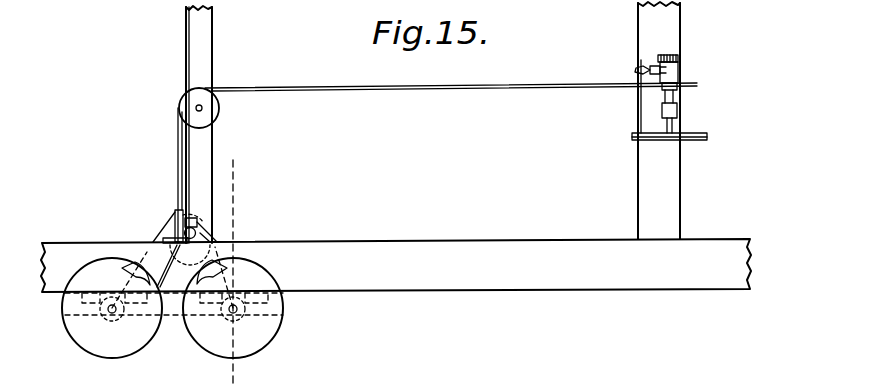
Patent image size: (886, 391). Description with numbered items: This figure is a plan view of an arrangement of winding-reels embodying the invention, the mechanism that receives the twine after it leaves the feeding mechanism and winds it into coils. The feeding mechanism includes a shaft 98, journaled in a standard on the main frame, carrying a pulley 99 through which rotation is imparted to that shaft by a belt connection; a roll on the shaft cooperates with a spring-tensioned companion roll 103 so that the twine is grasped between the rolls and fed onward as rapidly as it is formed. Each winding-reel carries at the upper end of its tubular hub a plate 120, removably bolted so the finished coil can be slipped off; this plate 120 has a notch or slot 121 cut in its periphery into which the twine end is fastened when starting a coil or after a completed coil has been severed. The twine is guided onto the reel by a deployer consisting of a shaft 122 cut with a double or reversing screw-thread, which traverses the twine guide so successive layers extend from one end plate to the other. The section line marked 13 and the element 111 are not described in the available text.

The section line 13 is at (265, 165).
The shaft 98 is at (667, 128).
The pulley 99 is at (687, 140).
The companion roll 103 is at (672, 76).
The ratchet head 111 is at (680, 58).
The plate 120 is at (83, 345).
The notch or slot 121 is at (147, 253).
The shaft 122 is at (194, 231).